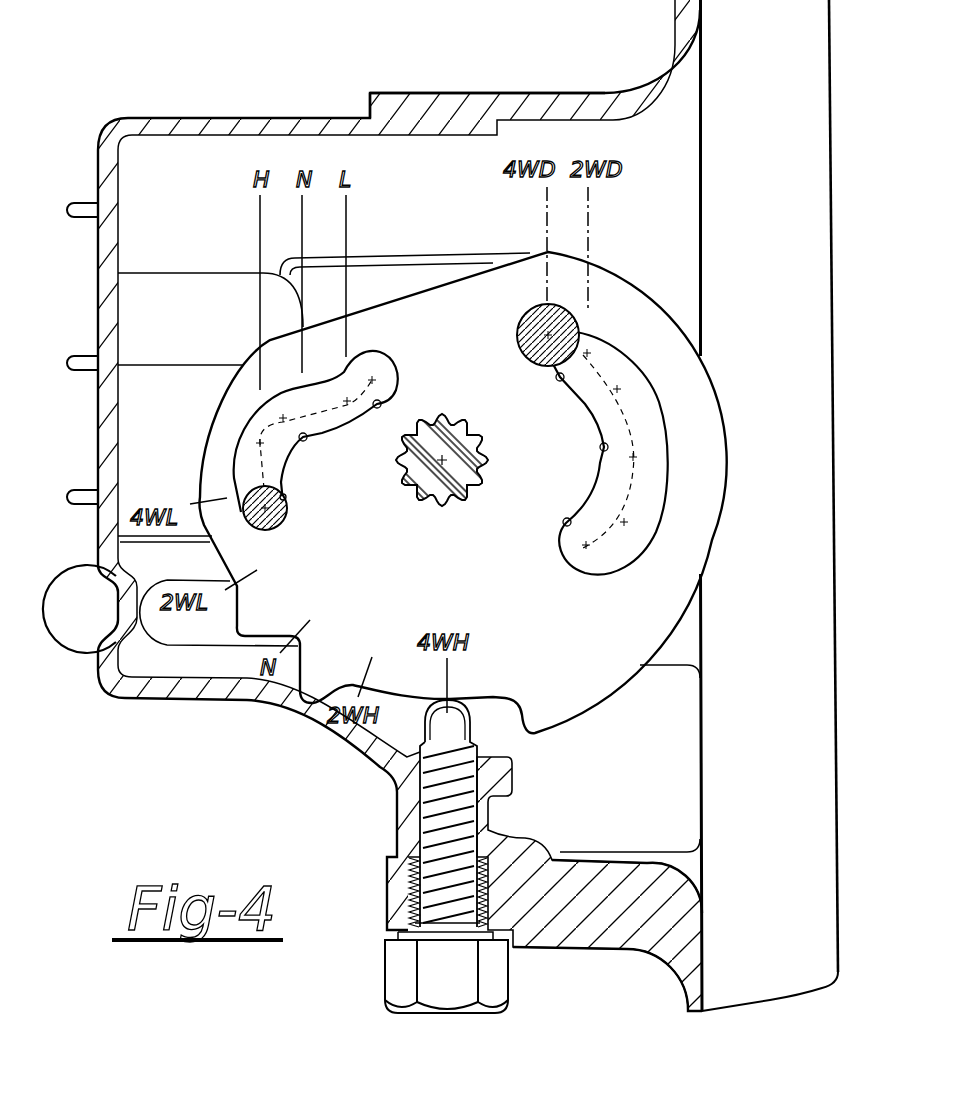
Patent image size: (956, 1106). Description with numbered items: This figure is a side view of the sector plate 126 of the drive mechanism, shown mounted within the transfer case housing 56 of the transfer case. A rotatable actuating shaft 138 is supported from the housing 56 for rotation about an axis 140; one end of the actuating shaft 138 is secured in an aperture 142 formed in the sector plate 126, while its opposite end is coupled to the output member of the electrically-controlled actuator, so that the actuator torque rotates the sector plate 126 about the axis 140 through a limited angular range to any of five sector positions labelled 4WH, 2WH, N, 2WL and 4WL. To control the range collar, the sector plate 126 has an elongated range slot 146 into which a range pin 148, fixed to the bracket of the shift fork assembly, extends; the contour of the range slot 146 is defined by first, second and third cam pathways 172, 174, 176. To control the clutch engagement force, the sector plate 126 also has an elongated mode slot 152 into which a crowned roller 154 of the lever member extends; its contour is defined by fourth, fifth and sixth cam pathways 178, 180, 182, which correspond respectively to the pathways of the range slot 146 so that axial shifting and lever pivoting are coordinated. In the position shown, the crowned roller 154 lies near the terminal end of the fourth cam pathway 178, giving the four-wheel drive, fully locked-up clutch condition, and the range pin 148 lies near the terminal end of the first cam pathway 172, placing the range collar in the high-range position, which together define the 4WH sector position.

The transfer case housing 56 is at (436, 110).
The sector plate 126 is at (727, 425).
The actuating shaft 138 is at (432, 436).
The axis 140 is at (468, 425).
The aperture 142 is at (453, 500).
The range slot 146 is at (289, 529).
The range pin 148 is at (247, 497).
The mode slot 152 is at (632, 561).
The crowned roller 154 is at (580, 338).
The first cam pathway 172 is at (287, 498).
The second cam pathway 174 is at (307, 441).
The third cam pathway 176 is at (376, 409).
The fourth cam pathway 178 is at (561, 382).
The fifth cam pathway 180 is at (599, 448).
The sixth cam pathway 182 is at (571, 517).